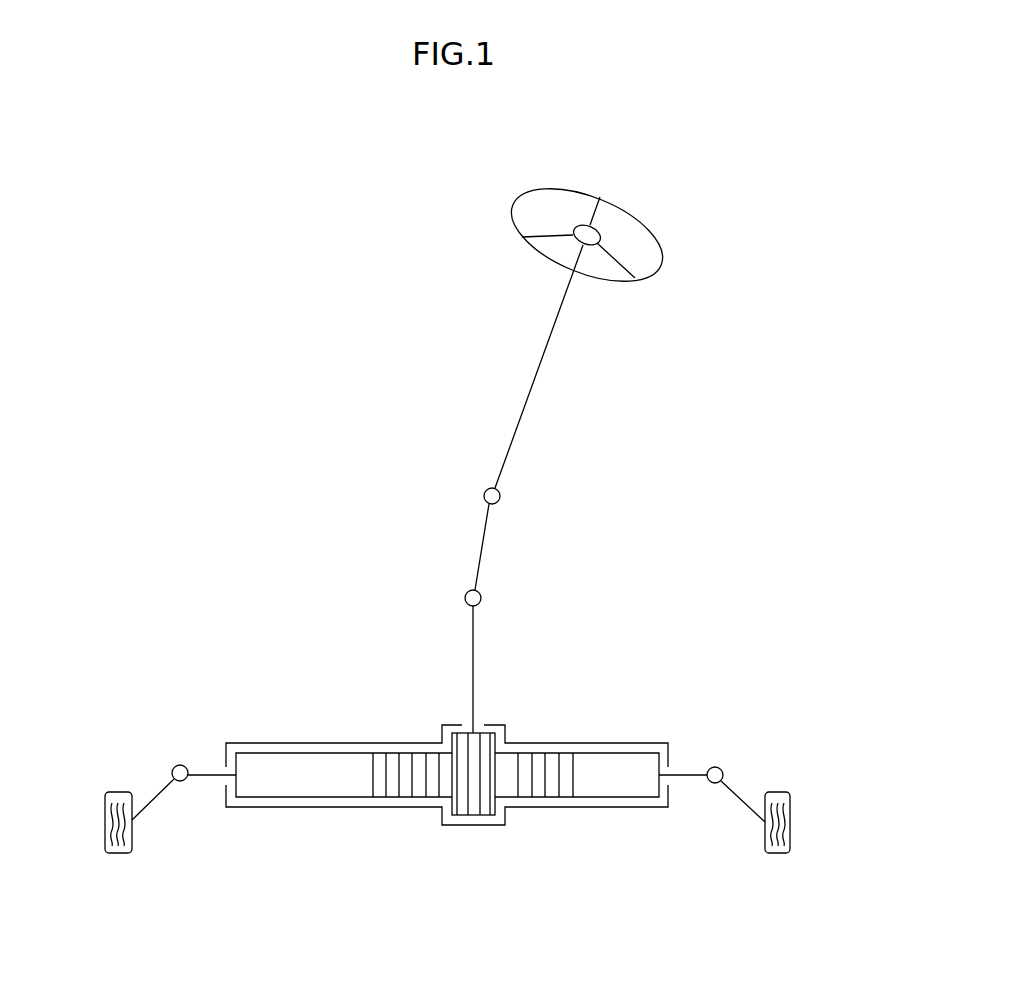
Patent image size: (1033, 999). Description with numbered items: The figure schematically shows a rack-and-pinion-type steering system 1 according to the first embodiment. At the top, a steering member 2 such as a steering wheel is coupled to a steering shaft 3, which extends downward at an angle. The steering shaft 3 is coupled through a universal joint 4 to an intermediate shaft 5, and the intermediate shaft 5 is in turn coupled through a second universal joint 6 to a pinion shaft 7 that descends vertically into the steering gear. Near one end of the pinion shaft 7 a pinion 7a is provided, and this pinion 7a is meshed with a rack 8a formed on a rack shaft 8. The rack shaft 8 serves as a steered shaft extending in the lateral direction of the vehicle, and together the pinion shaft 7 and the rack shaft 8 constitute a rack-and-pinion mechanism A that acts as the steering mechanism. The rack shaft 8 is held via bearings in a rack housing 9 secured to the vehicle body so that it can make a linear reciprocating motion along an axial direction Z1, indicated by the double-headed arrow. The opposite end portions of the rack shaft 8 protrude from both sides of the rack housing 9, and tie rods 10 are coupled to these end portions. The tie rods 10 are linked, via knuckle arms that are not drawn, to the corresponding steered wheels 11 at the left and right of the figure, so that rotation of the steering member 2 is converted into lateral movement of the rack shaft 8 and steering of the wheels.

The steering system 1 is at (683, 188).
The steering member 2 is at (565, 188).
The steering shaft 3 is at (537, 367).
The universal joint 4 is at (500, 498).
The intermediate shaft 5 is at (480, 552).
The universal joint 6 is at (481, 600).
The pinion shaft 7 is at (476, 678).
The pinion 7a is at (485, 807).
The rack shaft 8 is at (447, 812).
The rack 8a is at (422, 788).
The rack housing 9 is at (362, 743).
The tie rods 10 is at (162, 795).
The steered wheels 11 is at (117, 853).
The axial direction Z1 is at (727, 756).
The rack-and-pinion mechanism A is at (502, 830).